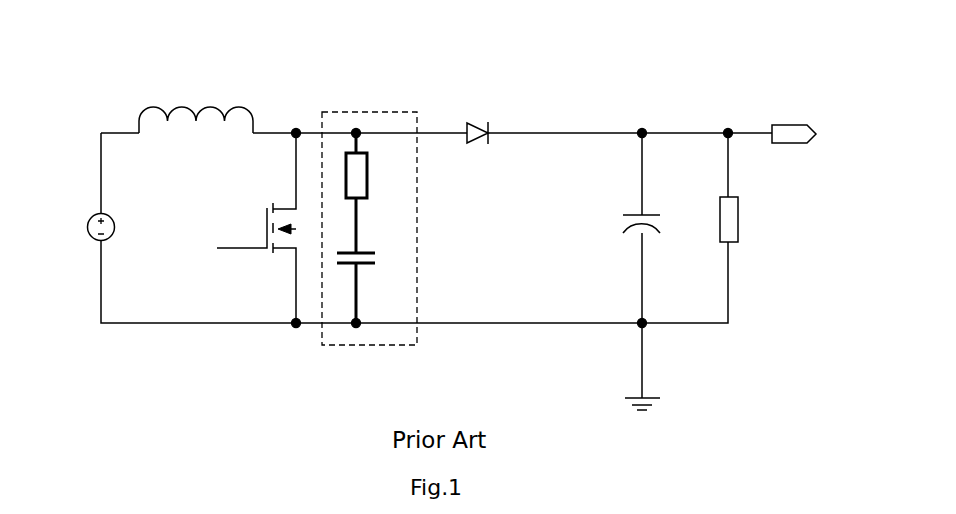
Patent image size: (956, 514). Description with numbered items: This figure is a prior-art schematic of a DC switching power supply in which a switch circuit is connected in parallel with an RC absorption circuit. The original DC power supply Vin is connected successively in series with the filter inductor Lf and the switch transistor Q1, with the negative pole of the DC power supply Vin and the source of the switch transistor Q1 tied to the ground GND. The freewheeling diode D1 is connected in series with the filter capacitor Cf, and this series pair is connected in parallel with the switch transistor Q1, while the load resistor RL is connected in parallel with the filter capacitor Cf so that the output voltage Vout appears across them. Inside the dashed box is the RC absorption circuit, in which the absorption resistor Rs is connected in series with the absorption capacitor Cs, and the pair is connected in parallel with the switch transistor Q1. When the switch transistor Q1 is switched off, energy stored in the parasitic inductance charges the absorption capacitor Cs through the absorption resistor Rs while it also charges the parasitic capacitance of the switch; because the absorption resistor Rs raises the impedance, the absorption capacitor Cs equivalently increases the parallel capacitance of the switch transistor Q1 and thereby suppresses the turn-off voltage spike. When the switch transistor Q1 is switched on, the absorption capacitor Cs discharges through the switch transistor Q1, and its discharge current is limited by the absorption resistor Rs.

The original DC power supply Vin is at (85, 227).
The filter inductor Lf is at (196, 108).
The switch transistor Q1 is at (256, 228).
The absorption resistor Rs is at (368, 193).
The absorption capacitor Cs is at (368, 286).
The freewheeling diode D1 is at (477, 123).
The filter capacitor Cf is at (652, 220).
The load resistor RL is at (741, 219).
The output voltage Vout is at (794, 121).
The ground GND is at (663, 383).